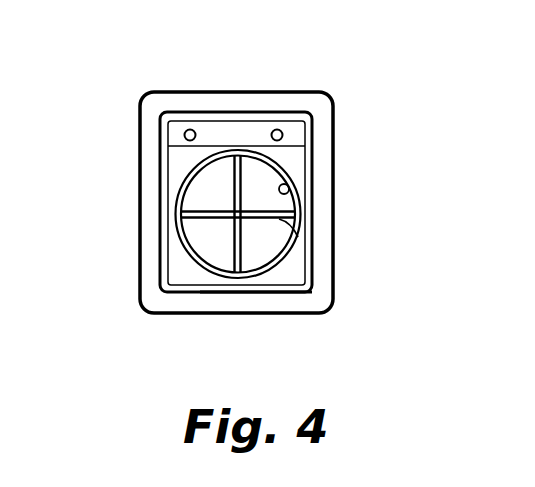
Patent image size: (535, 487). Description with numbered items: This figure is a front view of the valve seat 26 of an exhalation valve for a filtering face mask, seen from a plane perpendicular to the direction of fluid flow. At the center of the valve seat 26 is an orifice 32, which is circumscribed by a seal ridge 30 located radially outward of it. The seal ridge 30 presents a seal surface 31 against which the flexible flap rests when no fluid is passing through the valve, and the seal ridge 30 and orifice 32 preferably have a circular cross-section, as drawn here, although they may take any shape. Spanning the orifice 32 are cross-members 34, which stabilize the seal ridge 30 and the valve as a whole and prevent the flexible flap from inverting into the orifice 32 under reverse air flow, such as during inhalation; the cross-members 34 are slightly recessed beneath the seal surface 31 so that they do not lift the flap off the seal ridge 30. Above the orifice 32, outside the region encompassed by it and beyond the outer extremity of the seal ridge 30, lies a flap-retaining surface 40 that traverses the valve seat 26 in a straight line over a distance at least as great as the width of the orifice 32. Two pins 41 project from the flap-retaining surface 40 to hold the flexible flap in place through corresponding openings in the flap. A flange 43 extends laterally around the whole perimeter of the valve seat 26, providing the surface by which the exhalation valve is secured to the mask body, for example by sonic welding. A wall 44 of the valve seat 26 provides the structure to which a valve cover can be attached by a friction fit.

The valve seat 26 is at (318, 54).
The seal ridge 30 is at (186, 246).
The seal surface 31 is at (182, 192).
The orifice 32 is at (289, 187).
The cross-members 34 is at (250, 254).
The flap-retaining surface 40 is at (297, 135).
The pins 41 is at (272, 130).
The flange 43 is at (152, 146).
The wall 44 is at (282, 293).